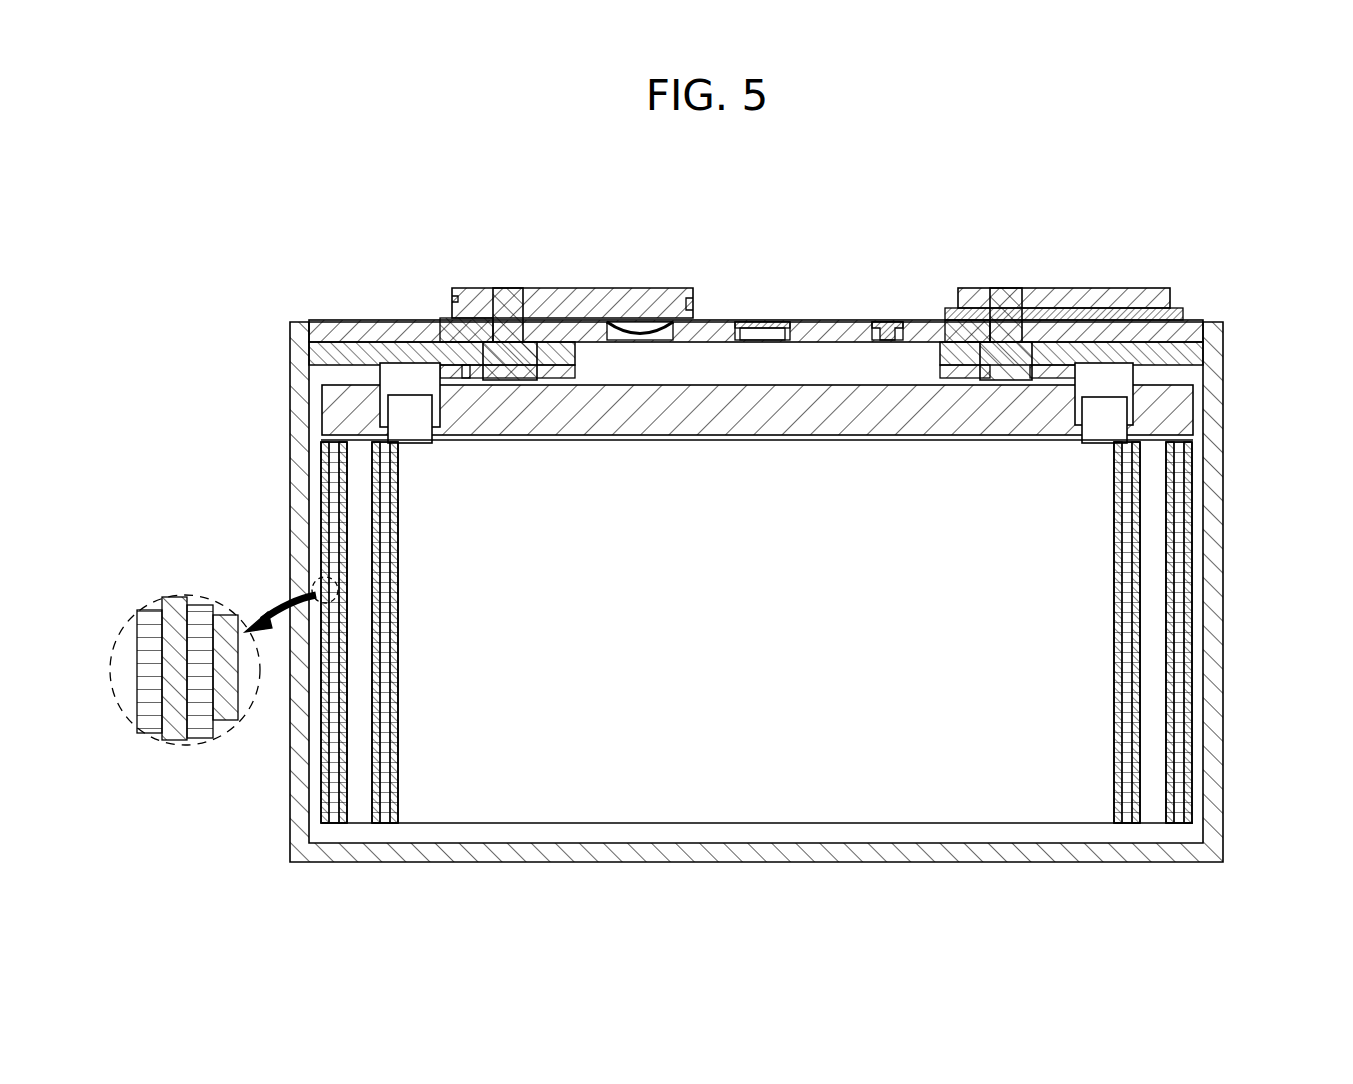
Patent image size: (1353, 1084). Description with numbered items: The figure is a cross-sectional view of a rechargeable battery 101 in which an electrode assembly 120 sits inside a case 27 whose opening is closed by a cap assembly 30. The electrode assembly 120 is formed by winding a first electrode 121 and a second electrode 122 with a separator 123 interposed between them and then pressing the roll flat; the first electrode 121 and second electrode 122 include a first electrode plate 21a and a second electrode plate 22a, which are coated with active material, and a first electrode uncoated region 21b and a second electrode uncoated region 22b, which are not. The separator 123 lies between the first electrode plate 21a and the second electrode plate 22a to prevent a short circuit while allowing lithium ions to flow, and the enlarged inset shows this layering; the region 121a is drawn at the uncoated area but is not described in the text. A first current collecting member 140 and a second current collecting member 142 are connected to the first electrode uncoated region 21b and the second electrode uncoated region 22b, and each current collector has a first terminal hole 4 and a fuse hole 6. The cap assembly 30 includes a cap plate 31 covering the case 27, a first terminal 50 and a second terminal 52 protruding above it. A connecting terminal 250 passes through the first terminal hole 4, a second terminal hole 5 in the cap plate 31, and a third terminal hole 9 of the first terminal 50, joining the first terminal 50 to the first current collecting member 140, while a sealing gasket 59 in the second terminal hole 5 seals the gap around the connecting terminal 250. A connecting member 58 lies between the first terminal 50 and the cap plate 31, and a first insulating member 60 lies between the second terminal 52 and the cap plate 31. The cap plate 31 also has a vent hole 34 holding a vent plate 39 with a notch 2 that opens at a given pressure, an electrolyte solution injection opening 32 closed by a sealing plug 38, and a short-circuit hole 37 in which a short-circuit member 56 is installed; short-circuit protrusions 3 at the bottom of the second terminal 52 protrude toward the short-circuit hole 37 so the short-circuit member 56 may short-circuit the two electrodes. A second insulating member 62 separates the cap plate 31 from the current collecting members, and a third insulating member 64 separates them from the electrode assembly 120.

The rechargeable battery 101 is at (748, 160).
The case 27 is at (1212, 577).
The cap assembly 30 is at (733, 320).
The notch 2 is at (764, 320).
The vent hole 34 is at (772, 320).
The vent plate 39 is at (788, 324).
The electrolyte solution injection opening 32 is at (878, 322).
The sealing plug 38 is at (893, 322).
The second terminal 52 is at (468, 289).
The first insulating member 60 is at (691, 305).
The first current collecting member 140 is at (1105, 290).
The first terminal 50 is at (1062, 310).
The connecting member 58 is at (1165, 335).
The cap plate 31 is at (1200, 322).
The sealing gasket 59 is at (447, 325).
The second insulating member 62 is at (330, 354).
The second current collecting member 142 is at (376, 336).
The short-circuit member 56 is at (655, 318).
The connecting terminal 250 is at (506, 288).
The third terminal hole 9 is at (526, 300).
The second terminal hole 5 is at (552, 318).
The short-circuit protrusions 3 is at (638, 326).
The short-circuit hole 37 is at (600, 322).
The third insulating member 64 is at (630, 410).
The fuse hole 6 is at (410, 345).
The first terminal hole 4 is at (518, 400).
The second electrode uncoated region 22b is at (412, 445).
The first electrode uncoated region 21b is at (1100, 445).
The uncoated region 121a is at (1112, 413).
The electrode assembly 120 is at (1082, 740).
The second electrode 122 is at (470, 523).
The second electrode plate 22a is at (398, 567).
The first electrode 121 is at (1030, 545).
The first electrode plate 21a is at (1128, 583).
The separator 123 is at (200, 615).